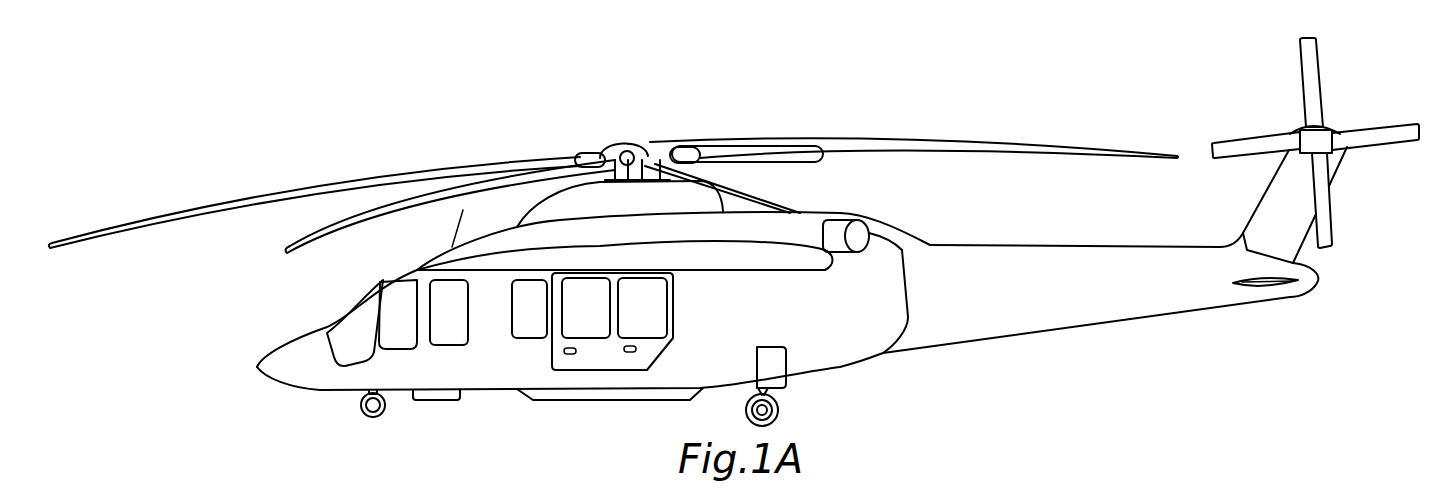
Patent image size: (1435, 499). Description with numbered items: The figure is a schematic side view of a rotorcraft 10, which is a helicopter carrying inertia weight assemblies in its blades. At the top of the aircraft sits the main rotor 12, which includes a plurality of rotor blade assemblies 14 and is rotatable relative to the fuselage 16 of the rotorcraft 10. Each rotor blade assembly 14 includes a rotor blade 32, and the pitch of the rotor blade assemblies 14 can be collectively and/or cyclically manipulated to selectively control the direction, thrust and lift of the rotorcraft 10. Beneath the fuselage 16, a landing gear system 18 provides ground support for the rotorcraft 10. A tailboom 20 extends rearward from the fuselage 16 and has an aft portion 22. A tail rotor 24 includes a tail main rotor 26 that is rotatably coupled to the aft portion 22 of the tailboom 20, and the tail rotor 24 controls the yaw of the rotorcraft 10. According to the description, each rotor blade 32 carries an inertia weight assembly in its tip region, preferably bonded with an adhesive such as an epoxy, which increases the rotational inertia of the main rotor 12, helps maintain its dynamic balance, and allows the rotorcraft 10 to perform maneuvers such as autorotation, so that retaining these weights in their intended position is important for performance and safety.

The rotorcraft 10 is at (768, 116).
The main rotor 12 is at (618, 140).
The rotor blade assemblies 14 is at (935, 135).
The fuselage 16 is at (498, 384).
The landing gear system 18 is at (362, 411).
The tailboom 20 is at (1057, 318).
The aft portion 22 is at (1283, 290).
The tail rotor 24 is at (1292, 118).
The tail main rotor 26 is at (1328, 128).
The rotor blade 32 is at (994, 146).